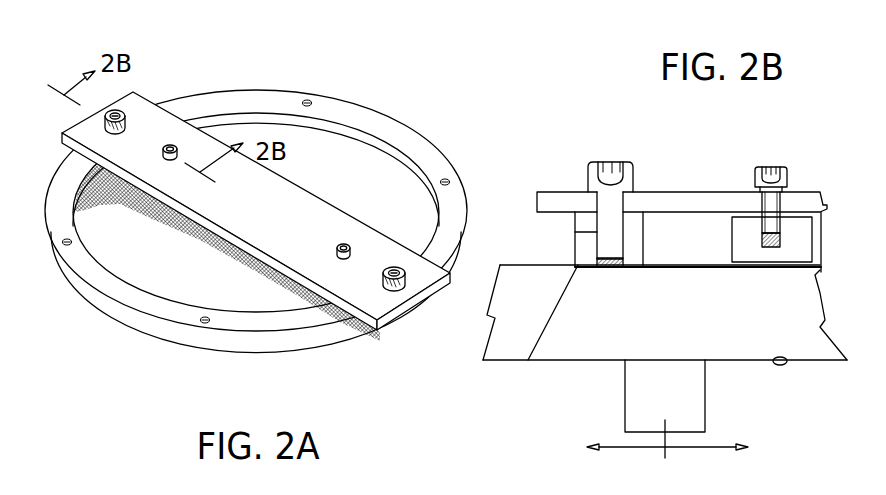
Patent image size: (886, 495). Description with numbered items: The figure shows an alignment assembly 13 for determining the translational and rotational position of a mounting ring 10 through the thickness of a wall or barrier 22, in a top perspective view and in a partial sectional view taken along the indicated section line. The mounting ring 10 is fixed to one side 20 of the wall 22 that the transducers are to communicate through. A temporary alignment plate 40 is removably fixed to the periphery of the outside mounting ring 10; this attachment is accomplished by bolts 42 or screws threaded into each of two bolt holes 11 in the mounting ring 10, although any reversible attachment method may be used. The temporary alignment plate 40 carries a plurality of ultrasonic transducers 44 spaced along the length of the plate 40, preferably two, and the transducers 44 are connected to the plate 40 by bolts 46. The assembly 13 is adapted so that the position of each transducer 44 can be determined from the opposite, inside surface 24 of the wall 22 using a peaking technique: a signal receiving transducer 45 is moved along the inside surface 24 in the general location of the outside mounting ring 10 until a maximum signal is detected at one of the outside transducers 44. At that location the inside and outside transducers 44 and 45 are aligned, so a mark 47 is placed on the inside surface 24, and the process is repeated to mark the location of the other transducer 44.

In FIG. 2A, the mounting ring 10 is at (400, 131).
In FIG. 2B, the mounting ring 10 is at (545, 265).
In FIG. 2A, the bolt holes 11 is at (449, 179).
In FIG. 2B, the bolt holes 11 is at (575, 232).
In FIG. 2A, the alignment assembly 13 is at (270, 72).
In FIG. 2B, the one side of the wall 20 is at (483, 360).
In FIG. 2B, the wall or barrier 22 is at (598, 337).
In FIG. 2B, the inside surface 24 is at (742, 362).
In FIG. 2A, the temporary alignment plate 40 is at (240, 185).
In FIG. 2B, the temporary alignment plate 40 is at (697, 197).
In FIG. 2A, the bolts 42 is at (393, 286).
In FIG. 2B, the bolts 42 is at (612, 195).
In FIG. 2B, the ultrasonic transducers 44 is at (752, 248).
In FIG. 2B, the signal receiving transducer 45 is at (630, 408).
In FIG. 2A, the bolts 46 is at (339, 252).
In FIG. 2B, the bolts 46 is at (777, 180).
In FIG. 2B, the mark 47 is at (783, 366).